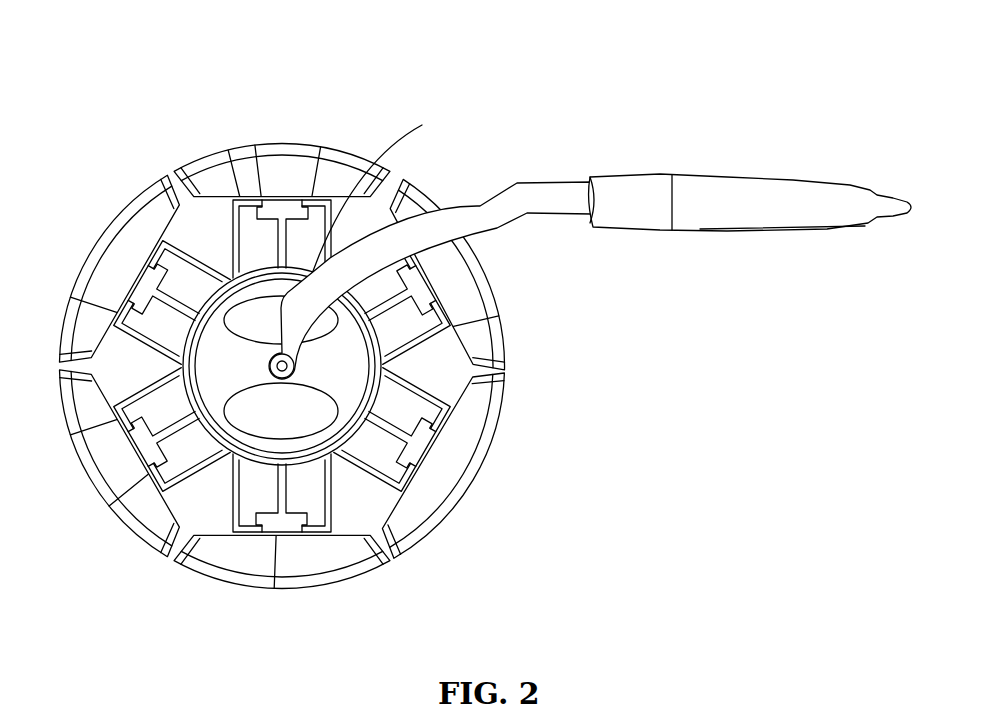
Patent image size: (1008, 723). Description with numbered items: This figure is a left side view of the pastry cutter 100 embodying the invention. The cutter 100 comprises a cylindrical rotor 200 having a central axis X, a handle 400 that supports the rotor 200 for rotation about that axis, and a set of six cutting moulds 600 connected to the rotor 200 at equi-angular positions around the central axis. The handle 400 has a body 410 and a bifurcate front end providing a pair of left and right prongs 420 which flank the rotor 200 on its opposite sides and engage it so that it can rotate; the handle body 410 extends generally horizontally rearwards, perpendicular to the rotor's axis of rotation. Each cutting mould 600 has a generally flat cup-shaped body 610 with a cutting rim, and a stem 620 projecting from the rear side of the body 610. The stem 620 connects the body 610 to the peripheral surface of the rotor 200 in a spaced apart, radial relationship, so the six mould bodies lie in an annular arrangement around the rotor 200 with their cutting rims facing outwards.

The pastry cutter 100 is at (240, 85).
The rotor 200 is at (204, 432).
The handle 400 is at (617, 158).
The handle body 410 is at (698, 215).
The prongs 420 is at (475, 225).
The cutting moulds 600 is at (52, 290).
The cup-shaped body 610 is at (137, 211).
The stem 620 is at (153, 258).